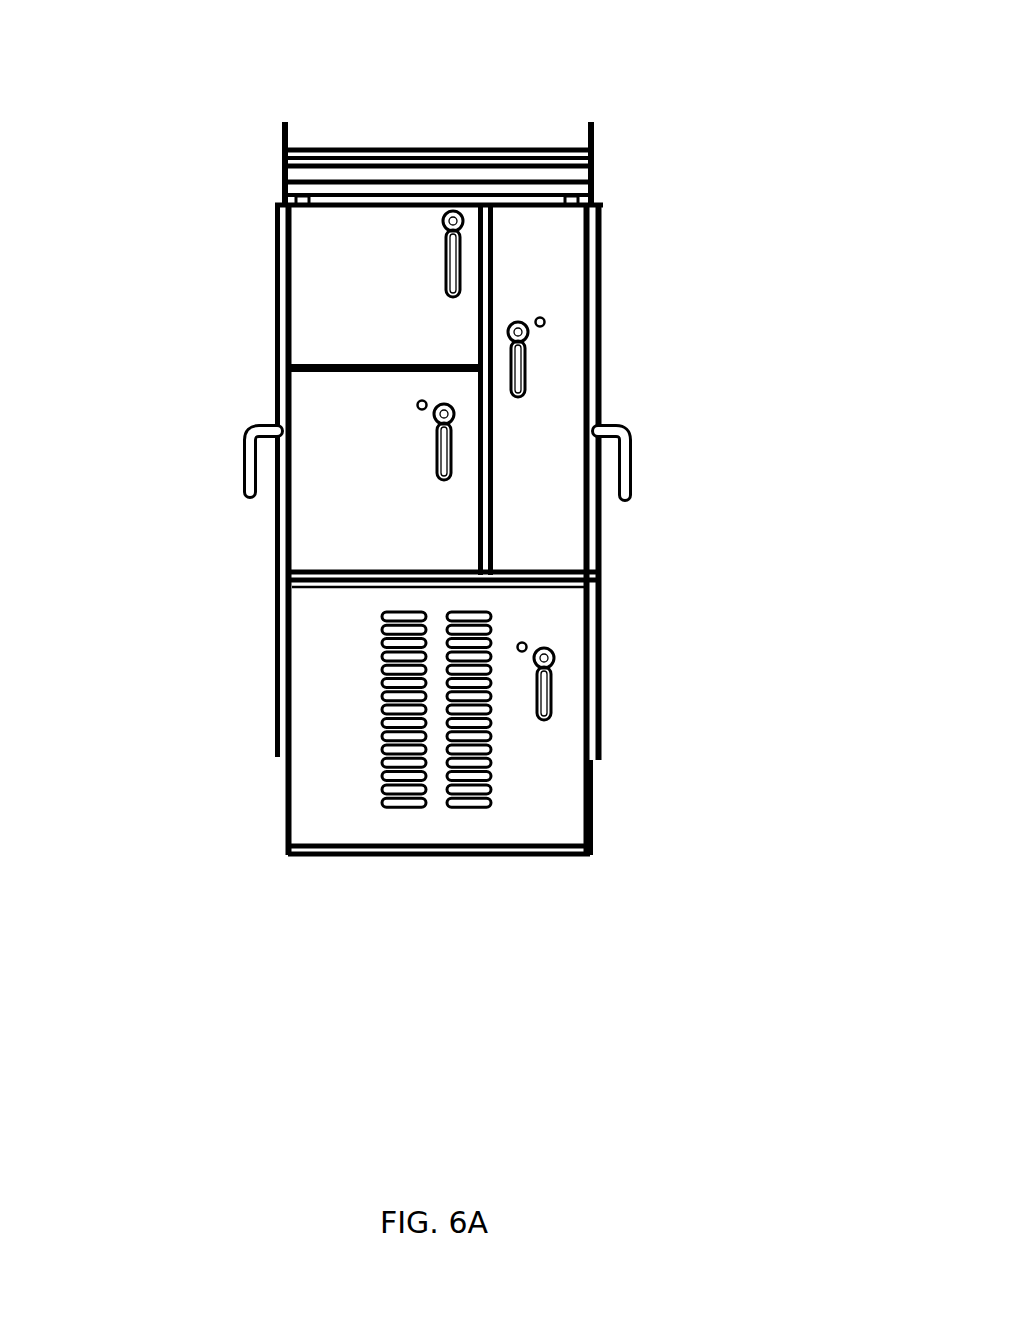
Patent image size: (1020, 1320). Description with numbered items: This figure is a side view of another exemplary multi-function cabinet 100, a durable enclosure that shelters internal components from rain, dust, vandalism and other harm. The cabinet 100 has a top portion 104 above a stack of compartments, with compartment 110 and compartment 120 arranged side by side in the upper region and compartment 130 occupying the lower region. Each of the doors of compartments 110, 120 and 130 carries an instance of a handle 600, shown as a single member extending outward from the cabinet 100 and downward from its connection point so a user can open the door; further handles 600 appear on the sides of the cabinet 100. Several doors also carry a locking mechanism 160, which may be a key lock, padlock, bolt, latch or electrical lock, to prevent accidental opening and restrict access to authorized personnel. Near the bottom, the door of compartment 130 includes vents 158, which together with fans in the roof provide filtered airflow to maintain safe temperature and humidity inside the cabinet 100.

The multi-function cabinet 100 is at (212, 80).
The top portion 104 is at (502, 147).
The compartment 110 is at (325, 543).
The compartment 120 is at (562, 263).
The compartment 130 is at (317, 783).
The vents 158 is at (377, 713).
The locking mechanism 160 is at (552, 310).
The handle 600 is at (440, 253).